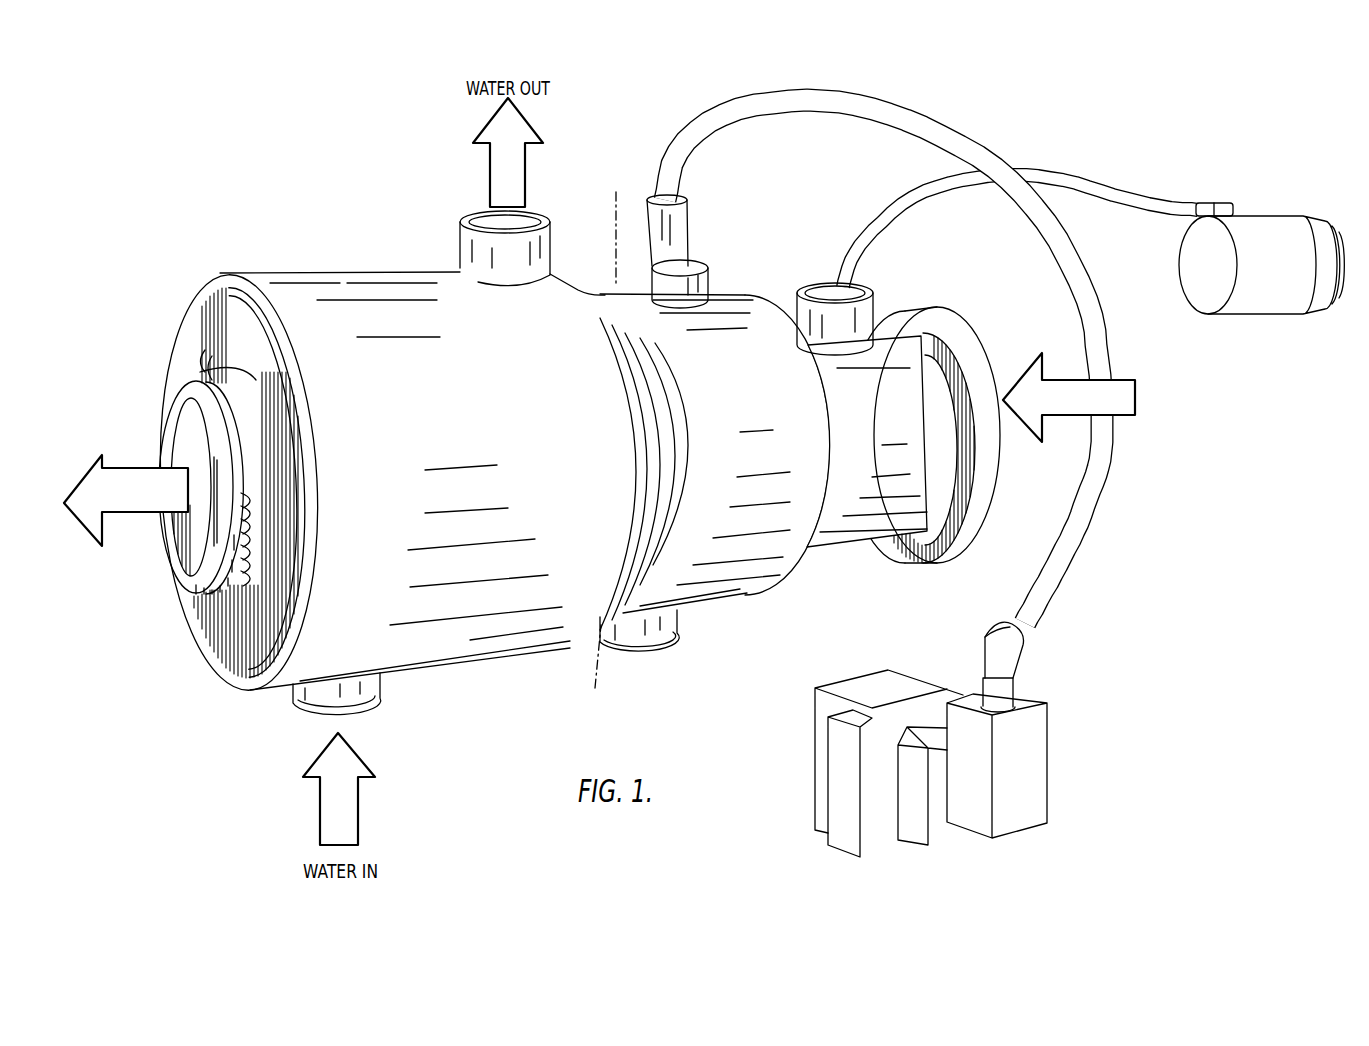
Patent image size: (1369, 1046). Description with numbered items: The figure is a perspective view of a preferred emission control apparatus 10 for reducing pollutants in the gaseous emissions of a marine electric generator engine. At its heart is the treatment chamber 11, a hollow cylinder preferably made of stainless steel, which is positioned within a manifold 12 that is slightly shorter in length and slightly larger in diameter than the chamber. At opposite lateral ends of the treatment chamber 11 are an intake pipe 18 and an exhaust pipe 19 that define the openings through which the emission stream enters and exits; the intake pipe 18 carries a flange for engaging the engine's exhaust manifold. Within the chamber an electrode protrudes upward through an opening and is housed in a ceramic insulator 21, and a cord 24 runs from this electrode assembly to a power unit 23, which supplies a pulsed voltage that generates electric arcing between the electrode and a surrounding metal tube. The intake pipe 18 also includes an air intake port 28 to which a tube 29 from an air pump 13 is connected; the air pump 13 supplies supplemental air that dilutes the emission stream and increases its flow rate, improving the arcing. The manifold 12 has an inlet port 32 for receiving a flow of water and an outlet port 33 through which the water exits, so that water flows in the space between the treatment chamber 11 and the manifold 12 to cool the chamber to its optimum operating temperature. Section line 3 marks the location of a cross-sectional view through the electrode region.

The emission control apparatus 10 is at (333, 200).
The treatment chamber 11 is at (743, 547).
The manifold 12 is at (302, 300).
The air pump 13 is at (1270, 240).
The intake pipe 18 is at (853, 490).
The exhaust pipe 19 is at (237, 597).
The ceramic insulator 21 is at (667, 233).
The power unit 23 is at (980, 768).
The cord 24 is at (933, 130).
The air intake port 28 is at (875, 333).
The tube 29 is at (1060, 173).
The inlet port 32 is at (382, 692).
The outlet port 33 is at (482, 248).
The section line 3- 3 is at (640, 187).